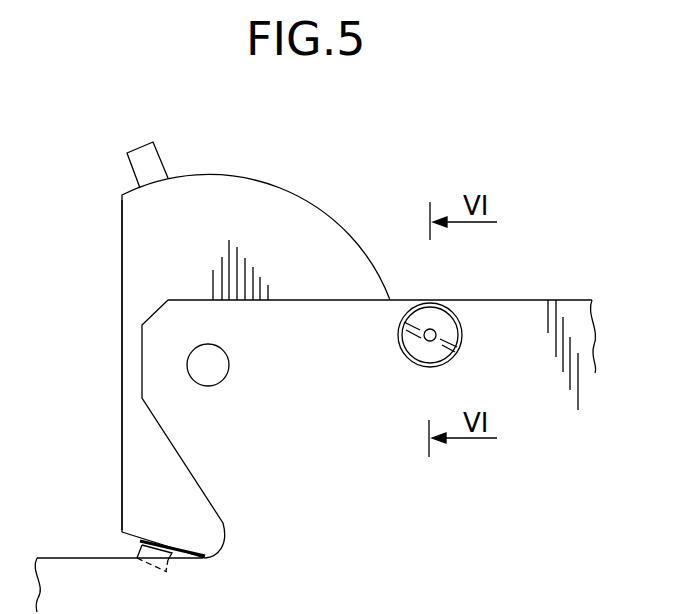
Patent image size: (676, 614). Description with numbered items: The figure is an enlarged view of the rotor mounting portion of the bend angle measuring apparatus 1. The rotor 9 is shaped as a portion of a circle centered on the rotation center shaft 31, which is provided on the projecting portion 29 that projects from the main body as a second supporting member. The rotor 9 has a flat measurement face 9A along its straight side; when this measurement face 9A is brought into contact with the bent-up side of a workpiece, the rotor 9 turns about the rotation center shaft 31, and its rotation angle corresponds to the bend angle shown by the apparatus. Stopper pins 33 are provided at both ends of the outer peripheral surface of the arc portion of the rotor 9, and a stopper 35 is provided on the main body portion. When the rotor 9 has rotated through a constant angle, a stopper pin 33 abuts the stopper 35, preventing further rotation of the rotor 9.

The bend angle measuring apparatus 1 is at (582, 180).
The rotor 9 is at (347, 198).
The measurement face 9A is at (122, 298).
The projecting portion 29 is at (317, 318).
The rotation center shaft 31 is at (229, 365).
The stopper pin 33 is at (142, 145).
The stopper 35 is at (454, 336).